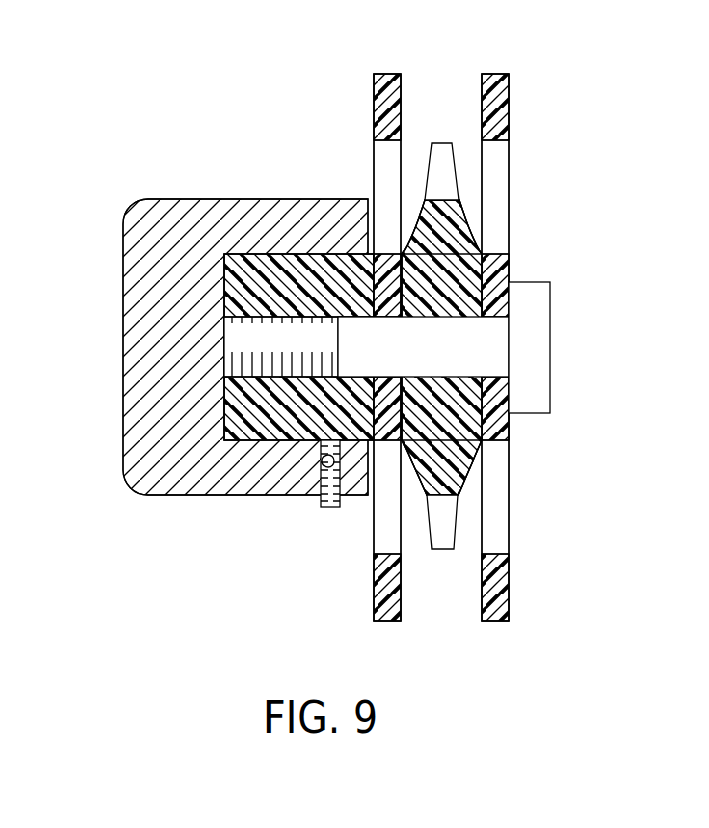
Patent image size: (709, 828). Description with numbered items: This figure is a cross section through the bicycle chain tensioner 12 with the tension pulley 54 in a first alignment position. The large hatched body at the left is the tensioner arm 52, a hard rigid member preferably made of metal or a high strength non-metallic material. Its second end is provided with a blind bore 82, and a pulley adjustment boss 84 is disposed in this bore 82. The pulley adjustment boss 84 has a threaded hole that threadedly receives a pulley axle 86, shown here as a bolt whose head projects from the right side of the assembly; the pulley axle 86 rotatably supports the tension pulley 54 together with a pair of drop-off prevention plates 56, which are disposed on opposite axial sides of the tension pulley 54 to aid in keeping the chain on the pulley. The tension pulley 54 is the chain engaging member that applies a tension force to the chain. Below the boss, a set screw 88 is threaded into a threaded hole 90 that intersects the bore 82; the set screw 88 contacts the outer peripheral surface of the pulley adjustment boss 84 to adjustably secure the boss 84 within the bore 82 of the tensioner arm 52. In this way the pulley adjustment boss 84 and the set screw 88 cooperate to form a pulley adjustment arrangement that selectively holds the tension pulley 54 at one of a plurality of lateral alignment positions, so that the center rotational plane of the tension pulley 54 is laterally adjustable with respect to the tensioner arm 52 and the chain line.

The bicycle chain tensioner 12 is at (340, 356).
The tensioner arm 52 is at (183, 199).
The pulley adjustment boss 84 is at (299, 254).
The blind bore 82 is at (250, 440).
The tension pulley 54 is at (438, 143).
The drop-off prevention plates 56 is at (385, 621).
The pulley axle 86 is at (530, 282).
The set screw 88 is at (332, 507).
The threaded hole 90 is at (322, 466).